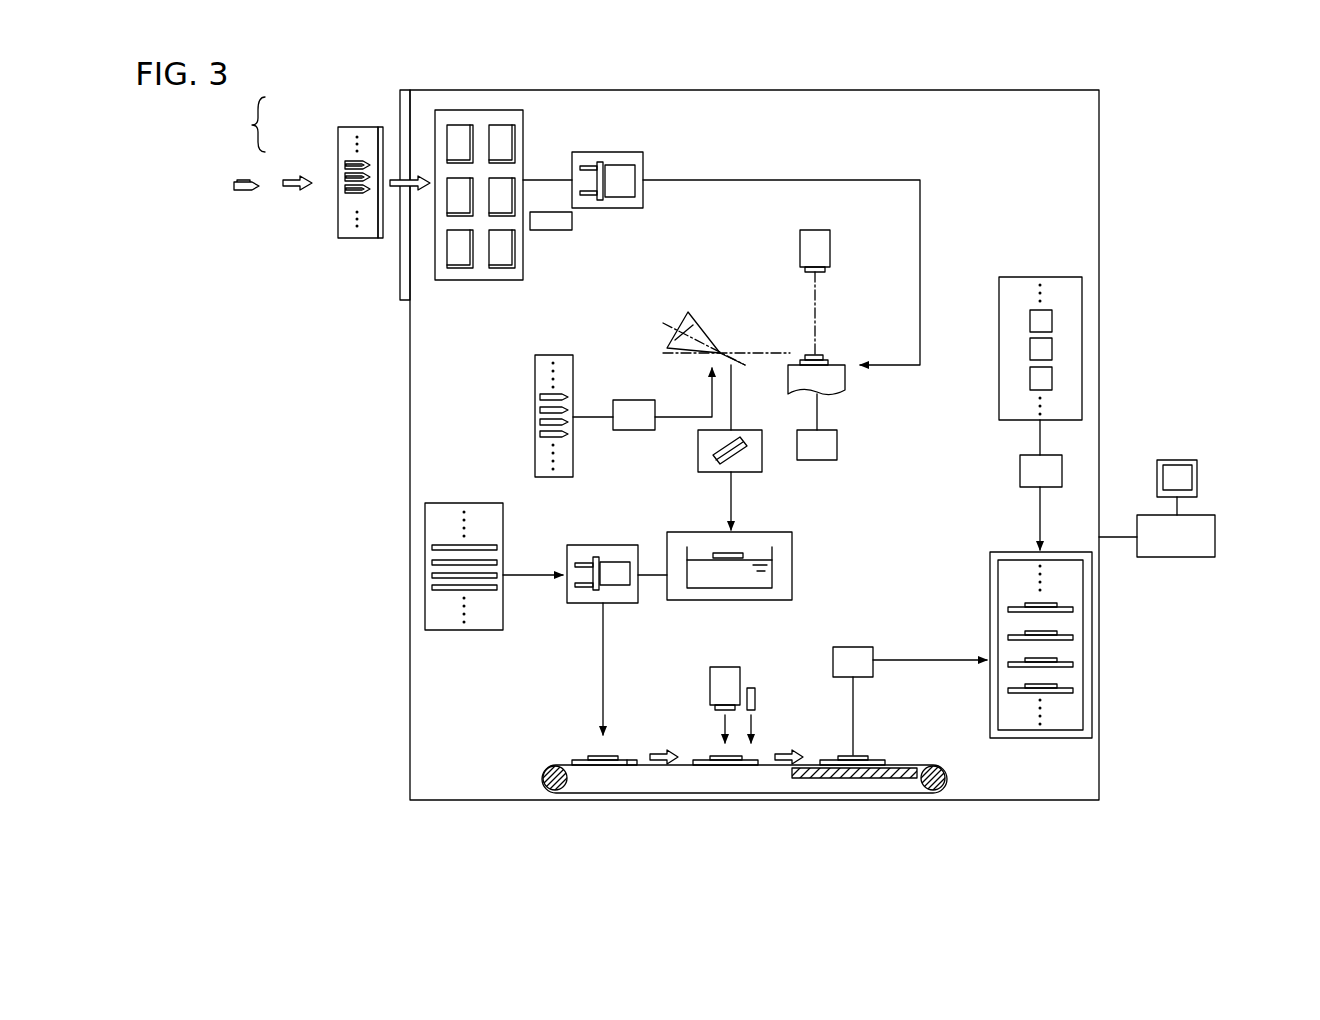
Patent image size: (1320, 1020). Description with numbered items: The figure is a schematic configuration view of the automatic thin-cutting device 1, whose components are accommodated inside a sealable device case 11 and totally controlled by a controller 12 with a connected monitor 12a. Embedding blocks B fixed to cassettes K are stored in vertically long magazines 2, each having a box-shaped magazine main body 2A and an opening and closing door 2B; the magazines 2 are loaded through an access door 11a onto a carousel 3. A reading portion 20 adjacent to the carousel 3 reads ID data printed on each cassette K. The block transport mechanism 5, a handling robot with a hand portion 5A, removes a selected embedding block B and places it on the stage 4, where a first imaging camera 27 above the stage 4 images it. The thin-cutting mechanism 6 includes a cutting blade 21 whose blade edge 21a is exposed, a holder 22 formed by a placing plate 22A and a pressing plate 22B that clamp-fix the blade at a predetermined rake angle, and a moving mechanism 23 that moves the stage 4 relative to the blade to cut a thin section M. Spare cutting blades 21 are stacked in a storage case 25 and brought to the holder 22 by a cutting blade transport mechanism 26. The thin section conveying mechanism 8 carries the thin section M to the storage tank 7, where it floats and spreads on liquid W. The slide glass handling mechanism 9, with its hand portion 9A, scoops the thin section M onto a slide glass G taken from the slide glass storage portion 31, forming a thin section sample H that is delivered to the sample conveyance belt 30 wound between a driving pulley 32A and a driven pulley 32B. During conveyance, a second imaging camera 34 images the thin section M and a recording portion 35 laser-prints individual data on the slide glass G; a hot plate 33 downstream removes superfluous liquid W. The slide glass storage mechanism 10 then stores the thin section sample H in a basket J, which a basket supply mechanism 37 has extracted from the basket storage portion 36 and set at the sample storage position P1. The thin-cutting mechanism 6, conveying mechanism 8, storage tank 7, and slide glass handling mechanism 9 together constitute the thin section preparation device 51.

The automatic thin-cutting device 1 is at (1150, 101).
The magazine 2 is at (507, 318).
The magazine main body 2A is at (338, 138).
The opening and closing door 2B is at (378, 127).
The carousel 3 is at (503, 109).
The stage 4 is at (845, 380).
The block transport mechanism 5 is at (638, 150).
The hand portion 5A is at (619, 165).
The thin-cutting mechanism 6 is at (747, 306).
The storage tank 7 is at (793, 567).
The thin section conveying mechanism 8 is at (769, 465).
The slide glass handling mechanism 9 is at (635, 543).
The hand portion 9A is at (613, 568).
The slide glass storage mechanism 10 is at (853, 647).
The device case 11 is at (1100, 178).
The access door 11a is at (400, 277).
The controller 12 is at (1215, 537).
The monitor 12a is at (1197, 476).
The reading portion 20 is at (551, 230).
The cutting blade 21 is at (718, 348).
The blade edge 21a is at (722, 352).
The holder 22 is at (686, 307).
The placing plate 22A is at (670, 338).
The pressing plate 22B is at (688, 325).
The moving mechanism 23 is at (837, 445).
The storage case 25 is at (535, 455).
The cutting blade transport mechanism 26 is at (635, 405).
The first imaging camera 27 is at (830, 250).
The sample conveyance belt 30 is at (640, 794).
The slide glass storage portion 31 is at (425, 608).
The driving pulley 32A is at (543, 777).
The driven pulley 32B is at (947, 778).
The hot plate 33 is at (855, 778).
The second imaging camera 34 is at (710, 688).
The recording portion 35 is at (755, 699).
The basket storage portion 36 is at (1040, 277).
The basket supply mechanism 37 is at (1020, 472).
The thin section preparation device 51 is at (819, 520).
The embedding block B is at (240, 179).
The cassette K is at (246, 192).
The slide glass G is at (432, 546).
The thin section sample H is at (571, 757).
The basket J is at (1045, 322).
The thin section M is at (718, 460).
The liquid W is at (731, 585).
The sample storage position P1 is at (990, 578).